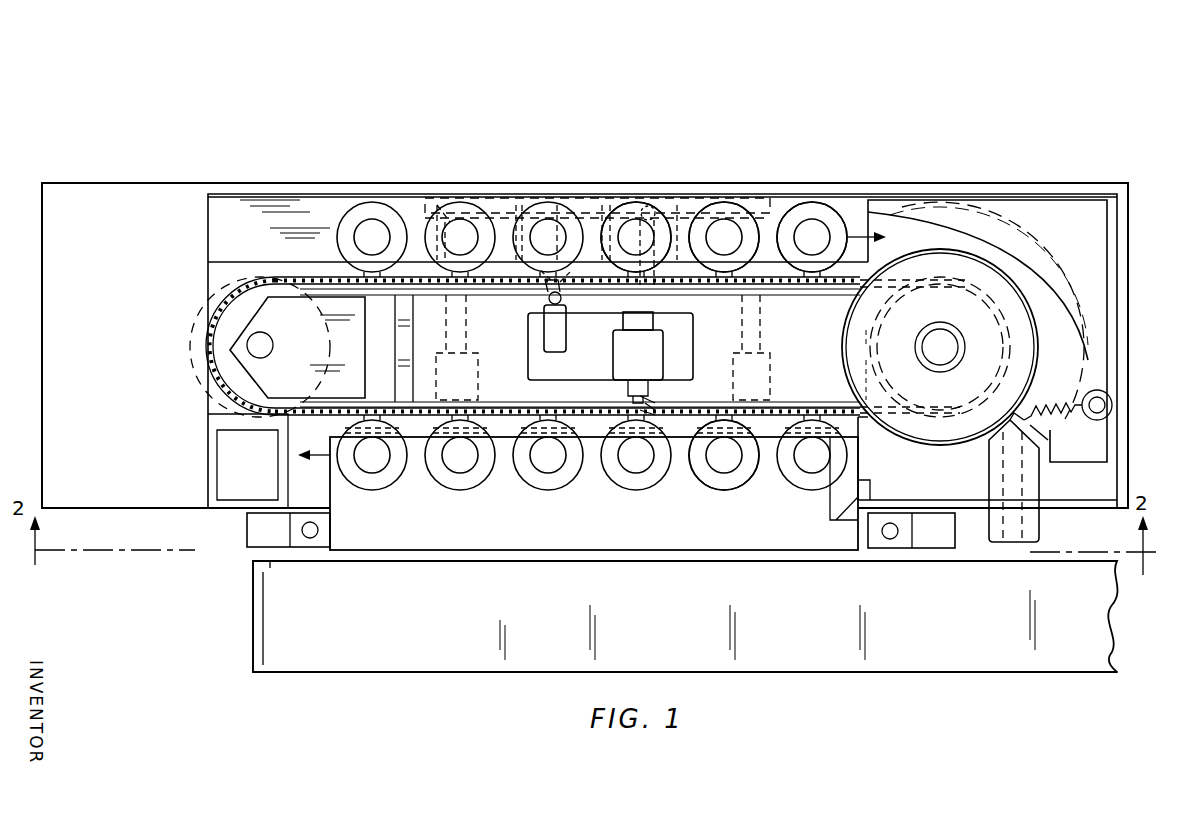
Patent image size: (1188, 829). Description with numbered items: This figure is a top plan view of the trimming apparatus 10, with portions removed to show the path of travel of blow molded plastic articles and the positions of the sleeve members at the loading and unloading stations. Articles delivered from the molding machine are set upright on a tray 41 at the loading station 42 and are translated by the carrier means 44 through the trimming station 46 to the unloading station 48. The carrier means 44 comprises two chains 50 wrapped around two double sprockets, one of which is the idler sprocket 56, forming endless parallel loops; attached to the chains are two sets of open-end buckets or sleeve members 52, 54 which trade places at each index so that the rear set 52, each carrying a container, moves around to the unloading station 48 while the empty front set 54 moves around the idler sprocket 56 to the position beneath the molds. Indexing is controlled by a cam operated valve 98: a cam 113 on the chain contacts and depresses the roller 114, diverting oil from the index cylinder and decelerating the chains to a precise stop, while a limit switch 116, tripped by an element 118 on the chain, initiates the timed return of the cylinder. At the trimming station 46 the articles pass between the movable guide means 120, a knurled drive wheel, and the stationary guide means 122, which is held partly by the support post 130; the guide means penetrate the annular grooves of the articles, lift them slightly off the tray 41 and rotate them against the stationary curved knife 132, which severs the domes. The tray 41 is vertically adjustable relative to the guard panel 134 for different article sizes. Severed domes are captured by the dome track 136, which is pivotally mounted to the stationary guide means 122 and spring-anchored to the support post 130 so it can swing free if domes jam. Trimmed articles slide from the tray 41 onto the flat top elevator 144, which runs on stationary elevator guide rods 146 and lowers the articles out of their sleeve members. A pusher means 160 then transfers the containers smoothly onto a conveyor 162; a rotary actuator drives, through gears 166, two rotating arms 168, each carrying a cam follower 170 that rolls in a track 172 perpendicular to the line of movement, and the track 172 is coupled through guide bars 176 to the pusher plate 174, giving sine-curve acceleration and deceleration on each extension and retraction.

The trimming apparatus 10 is at (1026, 86).
The tray 41 is at (692, 195).
The loading station 42 is at (740, 178).
The carrier means 44 is at (392, 205).
The trimming station 46 is at (1042, 262).
The unloading station 48 is at (646, 503).
The chains 50 is at (314, 443).
The sleeve members 52 is at (772, 205).
The sleeve members 54 is at (748, 470).
The idler sprocket 56 is at (218, 375).
The cam operated valve 98 is at (655, 353).
The cam 113 is at (660, 412).
The roller 114 is at (655, 407).
The limit switch 116 is at (553, 295).
The element 118 is at (578, 282).
The movable guide means 120 is at (980, 270).
The stationary guide means 122 is at (1090, 278).
The support post 130 is at (1113, 405).
The curved knife 132 is at (1040, 345).
The guard panel 134 is at (1128, 355).
The dome track 136 is at (1025, 480).
The elevator 144 is at (590, 560).
The elevator guide rods 146 is at (312, 538).
The pusher means 160 is at (412, 440).
The conveyor 162 is at (775, 660).
The gears 166 is at (500, 210).
The rotating arms 168 is at (602, 205).
The cam follower 170 is at (557, 205).
The track 172 is at (528, 205).
The pusher plate 174 is at (510, 445).
The guide bars 176 is at (440, 200).